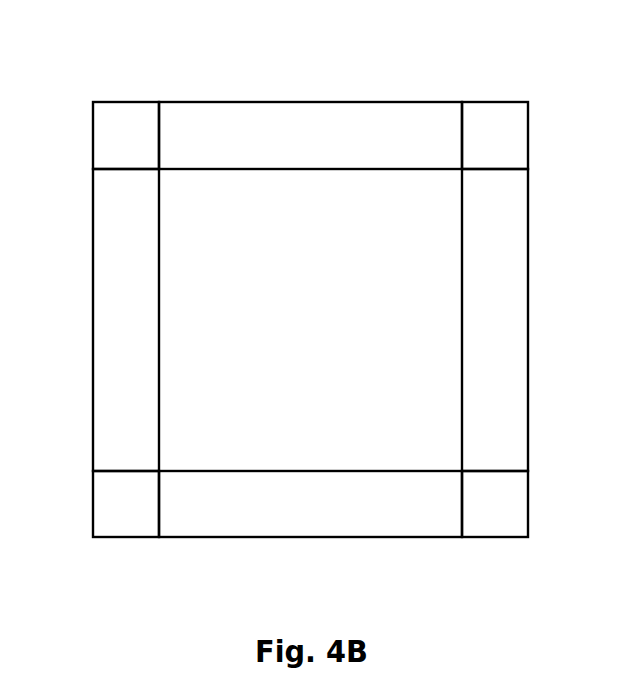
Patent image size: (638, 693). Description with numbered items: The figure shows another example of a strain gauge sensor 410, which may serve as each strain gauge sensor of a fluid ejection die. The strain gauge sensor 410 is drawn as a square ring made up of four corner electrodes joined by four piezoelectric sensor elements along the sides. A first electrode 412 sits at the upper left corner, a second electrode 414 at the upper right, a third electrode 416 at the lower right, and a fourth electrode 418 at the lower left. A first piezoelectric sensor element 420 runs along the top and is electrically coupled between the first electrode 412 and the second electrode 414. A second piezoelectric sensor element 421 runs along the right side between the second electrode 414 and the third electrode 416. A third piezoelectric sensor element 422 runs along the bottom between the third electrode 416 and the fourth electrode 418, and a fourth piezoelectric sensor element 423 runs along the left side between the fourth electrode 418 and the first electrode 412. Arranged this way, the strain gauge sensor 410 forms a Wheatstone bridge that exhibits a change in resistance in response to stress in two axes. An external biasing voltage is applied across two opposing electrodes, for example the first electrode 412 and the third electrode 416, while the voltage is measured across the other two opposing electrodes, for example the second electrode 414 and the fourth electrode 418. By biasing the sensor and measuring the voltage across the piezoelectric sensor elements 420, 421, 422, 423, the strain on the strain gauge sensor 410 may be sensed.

The strain gauge sensor 410 is at (308, 280).
The first electrode 412 is at (122, 112).
The second electrode 414 is at (493, 112).
The third electrode 416 is at (510, 518).
The fourth electrode 418 is at (108, 520).
The first piezoelectric sensor element 420 is at (291, 108).
The second piezoelectric sensor element 421 is at (510, 328).
The third piezoelectric sensor element 422 is at (282, 483).
The fourth piezoelectric sensor element 423 is at (110, 330).